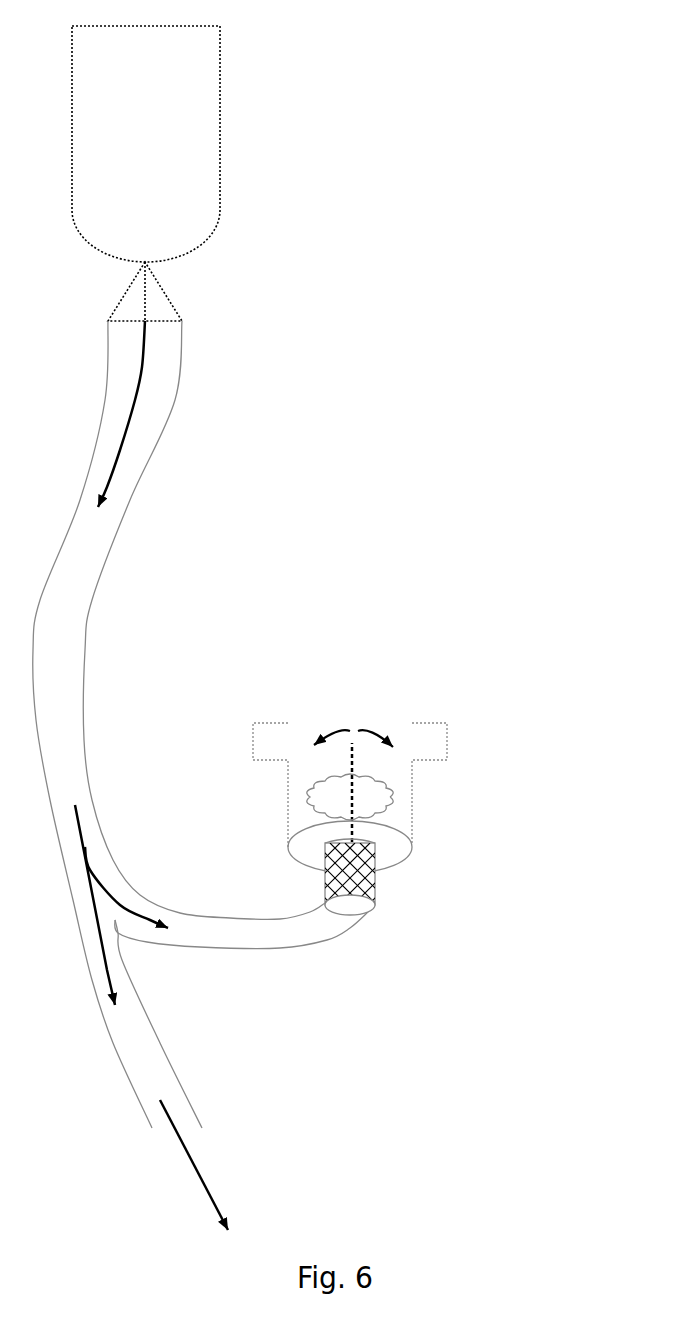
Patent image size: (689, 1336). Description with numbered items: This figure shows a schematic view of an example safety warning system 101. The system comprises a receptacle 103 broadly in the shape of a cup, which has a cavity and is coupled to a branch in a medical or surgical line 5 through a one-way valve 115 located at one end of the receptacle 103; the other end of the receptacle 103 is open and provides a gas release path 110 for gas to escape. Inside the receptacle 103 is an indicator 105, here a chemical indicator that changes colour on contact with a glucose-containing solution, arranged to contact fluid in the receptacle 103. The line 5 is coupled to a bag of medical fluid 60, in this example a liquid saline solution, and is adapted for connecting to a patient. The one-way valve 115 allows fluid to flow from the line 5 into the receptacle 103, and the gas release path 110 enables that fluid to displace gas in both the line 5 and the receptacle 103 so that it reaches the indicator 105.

The bag of medical fluid 60 is at (220, 173).
The medical or surgical line 5 is at (62, 602).
The safety warning system 101 is at (377, 538).
The gas release path 110 is at (372, 697).
The receptacle 103 is at (412, 843).
The indicator 105 is at (388, 792).
The one-way valve 115 is at (365, 902).